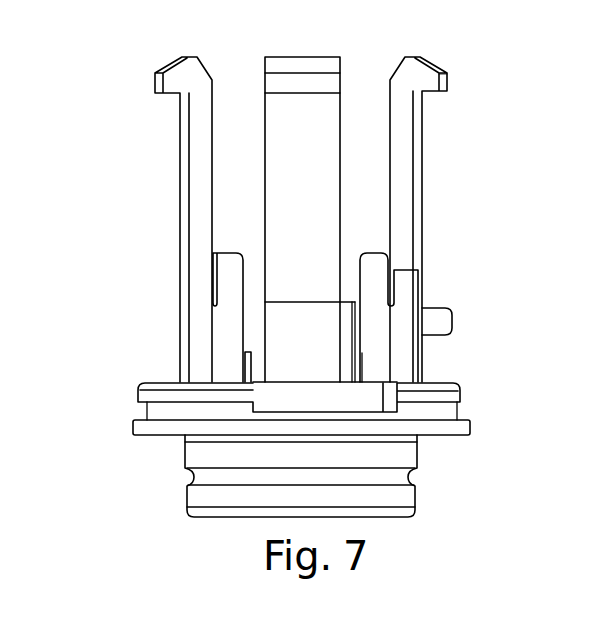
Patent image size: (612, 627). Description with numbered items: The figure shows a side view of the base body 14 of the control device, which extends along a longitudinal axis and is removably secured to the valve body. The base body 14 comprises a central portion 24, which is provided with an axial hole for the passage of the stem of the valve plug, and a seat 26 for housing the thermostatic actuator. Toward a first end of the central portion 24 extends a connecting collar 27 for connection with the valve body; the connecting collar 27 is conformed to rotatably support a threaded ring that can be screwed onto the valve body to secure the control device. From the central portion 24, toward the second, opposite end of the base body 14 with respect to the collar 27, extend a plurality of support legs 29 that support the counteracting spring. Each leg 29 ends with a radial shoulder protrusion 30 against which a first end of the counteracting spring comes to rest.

The base body 14 is at (145, 450).
The central portion 24 is at (373, 338).
The seat 26 is at (248, 283).
The connecting collar 27 is at (395, 460).
The support legs 29 is at (197, 141).
The radial shoulder protrusion 30 is at (420, 80).